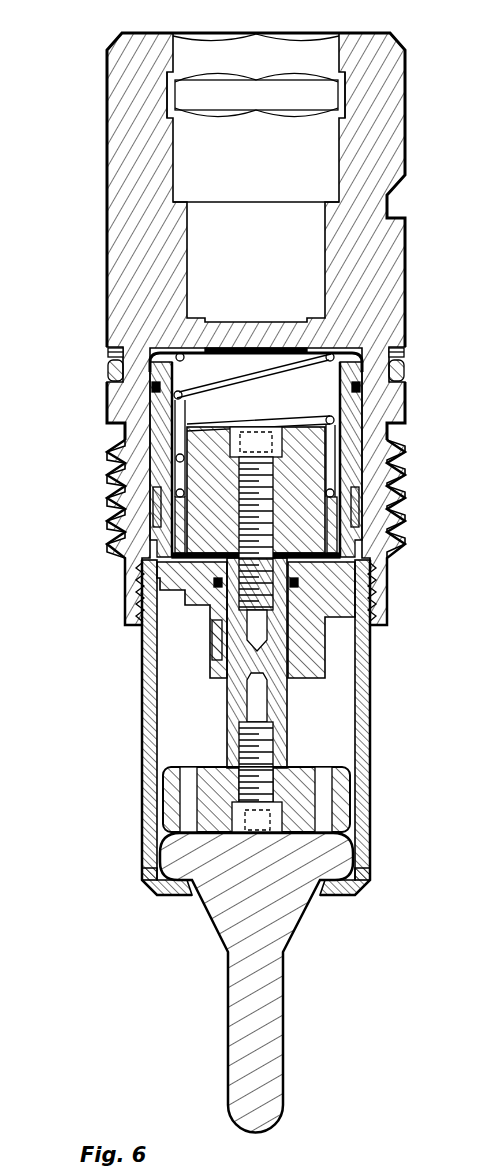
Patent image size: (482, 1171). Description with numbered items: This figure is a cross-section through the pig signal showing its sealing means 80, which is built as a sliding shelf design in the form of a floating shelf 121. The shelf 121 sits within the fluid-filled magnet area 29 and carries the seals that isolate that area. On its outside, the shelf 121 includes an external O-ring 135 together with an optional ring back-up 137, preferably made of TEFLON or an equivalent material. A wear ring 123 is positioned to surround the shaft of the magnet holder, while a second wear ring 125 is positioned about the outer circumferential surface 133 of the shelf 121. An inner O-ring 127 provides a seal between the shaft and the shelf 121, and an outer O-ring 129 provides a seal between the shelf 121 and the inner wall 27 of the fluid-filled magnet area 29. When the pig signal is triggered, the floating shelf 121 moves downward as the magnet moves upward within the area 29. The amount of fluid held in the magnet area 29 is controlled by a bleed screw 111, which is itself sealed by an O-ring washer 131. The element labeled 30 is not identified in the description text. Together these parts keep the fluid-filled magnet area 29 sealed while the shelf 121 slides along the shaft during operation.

The inner wall 27 is at (347, 398).
The fluid-filled magnet area 29 is at (272, 397).
The nozzle 30 is at (272, 1058).
The sealing means 80 is at (338, 630).
The bleed screw 111 is at (185, 605).
The floating shelf 121 is at (330, 686).
The wear ring 123 is at (222, 640).
The wear ring 125 is at (360, 506).
The inner O-ring 127 is at (300, 582).
The outer O-ring 129 is at (361, 389).
The O-ring washer 131 is at (160, 603).
The outer circumferential surface 133 is at (148, 460).
The external O-ring 135 is at (108, 370).
The ring back-up 137 is at (107, 351).